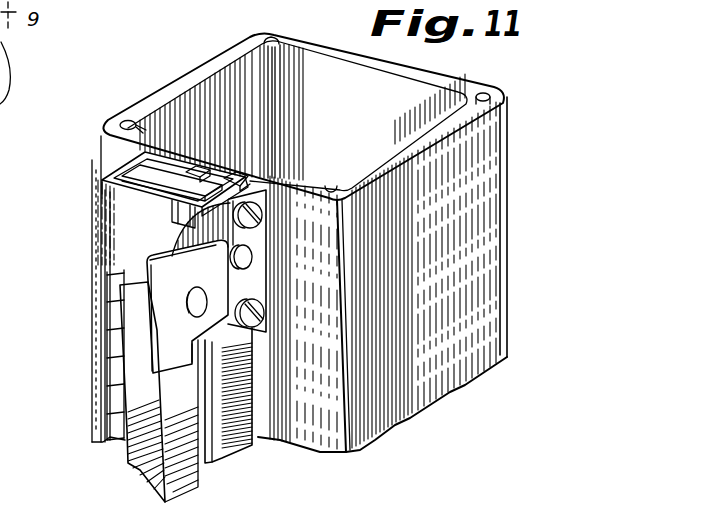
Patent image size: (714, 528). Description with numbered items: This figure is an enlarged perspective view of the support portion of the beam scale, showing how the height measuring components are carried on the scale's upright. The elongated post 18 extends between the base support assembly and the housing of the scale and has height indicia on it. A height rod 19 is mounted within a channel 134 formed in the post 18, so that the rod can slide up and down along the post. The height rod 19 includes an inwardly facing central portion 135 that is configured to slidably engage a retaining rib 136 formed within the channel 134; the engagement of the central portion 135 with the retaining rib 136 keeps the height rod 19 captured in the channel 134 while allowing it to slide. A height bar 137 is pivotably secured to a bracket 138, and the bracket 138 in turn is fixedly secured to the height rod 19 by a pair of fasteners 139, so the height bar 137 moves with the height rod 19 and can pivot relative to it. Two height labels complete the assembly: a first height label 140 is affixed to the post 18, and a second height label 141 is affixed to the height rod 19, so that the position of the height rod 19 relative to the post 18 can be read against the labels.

The post 18 is at (416, 412).
The height rod 19 is at (230, 454).
The channel 134 is at (128, 167).
The central portion 135 is at (232, 176).
The retaining rib 136 is at (198, 168).
The height bar 137 is at (157, 486).
The bracket 138 is at (138, 223).
The fasteners 139 is at (263, 218).
The first height label 140 is at (140, 281).
The second height label 141 is at (147, 191).